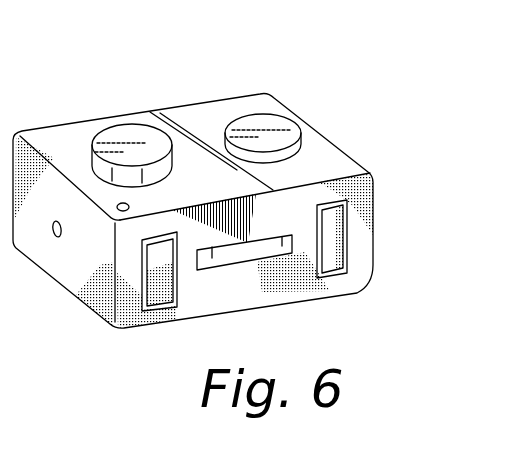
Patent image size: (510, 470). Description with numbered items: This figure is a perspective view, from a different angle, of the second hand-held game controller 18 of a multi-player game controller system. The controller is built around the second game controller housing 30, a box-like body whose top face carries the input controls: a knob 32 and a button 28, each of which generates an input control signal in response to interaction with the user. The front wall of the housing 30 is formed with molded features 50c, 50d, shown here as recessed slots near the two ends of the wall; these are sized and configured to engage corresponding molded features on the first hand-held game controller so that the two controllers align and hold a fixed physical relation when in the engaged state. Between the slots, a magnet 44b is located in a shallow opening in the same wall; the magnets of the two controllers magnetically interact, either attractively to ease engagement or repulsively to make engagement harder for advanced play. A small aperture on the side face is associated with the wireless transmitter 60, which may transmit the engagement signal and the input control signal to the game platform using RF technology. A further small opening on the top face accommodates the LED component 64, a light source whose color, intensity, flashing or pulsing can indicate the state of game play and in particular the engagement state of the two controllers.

The second hand-held game controller 18 is at (178, 77).
The button 28 is at (283, 127).
The second game controller housing 30 is at (220, 305).
The knob 32 is at (120, 132).
The magnet 44b is at (235, 260).
The molded feature 50c is at (165, 297).
The molded feature 50d is at (328, 258).
The wireless transmitter 60 is at (52, 235).
The LED component 64 is at (129, 206).